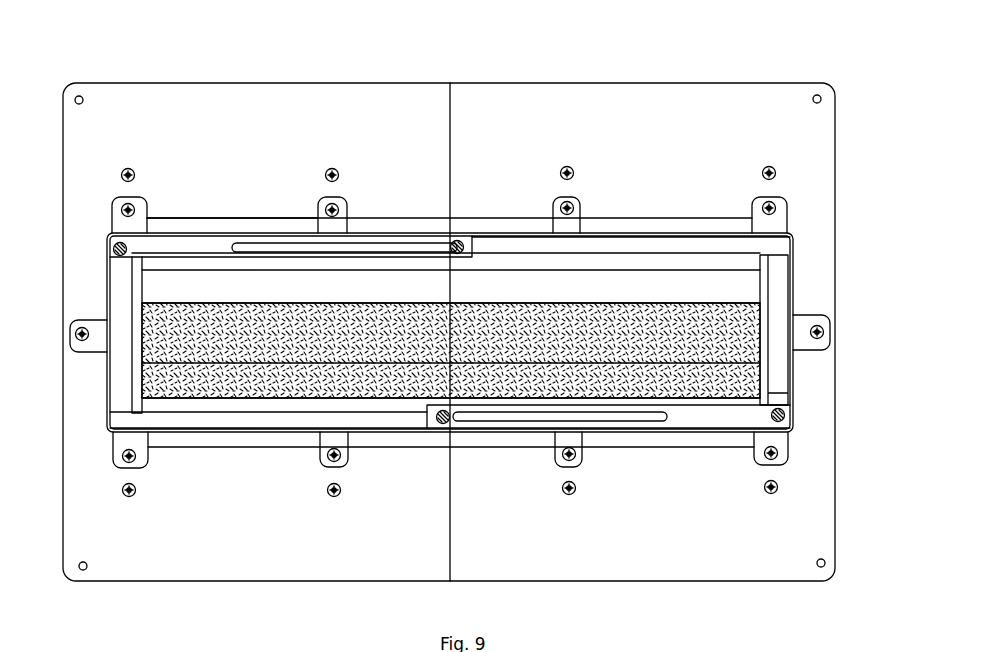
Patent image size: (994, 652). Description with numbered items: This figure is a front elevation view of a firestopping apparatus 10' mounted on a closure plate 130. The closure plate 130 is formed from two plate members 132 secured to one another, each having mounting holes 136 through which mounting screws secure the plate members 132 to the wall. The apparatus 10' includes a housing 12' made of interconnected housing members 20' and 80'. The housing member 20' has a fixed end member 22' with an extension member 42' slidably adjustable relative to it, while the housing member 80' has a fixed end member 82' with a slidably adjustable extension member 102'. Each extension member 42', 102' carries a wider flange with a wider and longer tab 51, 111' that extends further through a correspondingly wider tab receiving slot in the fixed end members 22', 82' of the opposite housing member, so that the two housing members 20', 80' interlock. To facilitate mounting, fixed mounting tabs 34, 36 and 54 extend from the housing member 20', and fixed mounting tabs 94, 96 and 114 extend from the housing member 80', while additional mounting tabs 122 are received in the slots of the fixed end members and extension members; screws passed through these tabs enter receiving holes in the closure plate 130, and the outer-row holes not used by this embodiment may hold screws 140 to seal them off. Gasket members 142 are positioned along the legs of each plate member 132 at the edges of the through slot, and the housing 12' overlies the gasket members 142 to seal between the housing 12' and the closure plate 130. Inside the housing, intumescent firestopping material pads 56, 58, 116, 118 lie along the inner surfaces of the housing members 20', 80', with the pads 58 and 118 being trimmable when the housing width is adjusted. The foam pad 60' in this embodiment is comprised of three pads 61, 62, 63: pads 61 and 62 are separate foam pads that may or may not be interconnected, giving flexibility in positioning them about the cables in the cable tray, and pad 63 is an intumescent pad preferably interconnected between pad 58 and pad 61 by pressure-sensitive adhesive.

The firestopping apparatus 10' is at (467, 329).
The closure plate 130 is at (213, 82).
The plate member 132 is at (336, 88).
The mounting hole 136 is at (80, 96).
The gasket member 142 is at (396, 216).
The fixed mounting tab 54 is at (115, 203).
The screw 140 is at (340, 203).
The fixed mounting tab 34 is at (785, 200).
The fixed mounting tab 94 is at (118, 463).
The additional mounting tab 122 is at (564, 238).
The fixed mounting tab 114 is at (784, 468).
The fixed mounting tab 96 is at (78, 320).
The fixed mounting tab 36 is at (832, 320).
The housing member 80' is at (458, 314).
The housing member 20' is at (502, 312).
The extension member 42' is at (291, 185).
The tab 51 is at (104, 240).
The housing 12' is at (232, 181).
The fixed end member 22' is at (631, 174).
The intumescent firestopping material pad 116 is at (136, 376).
The intumescent firestopping material pad 58 is at (166, 264).
The pad 63 is at (644, 288).
The foam pad 60' is at (451, 253).
The pad 61 is at (572, 334).
The pad 62 is at (690, 378).
The intumescent firestopping material pad 56 is at (764, 374).
The intumescent firestopping material pad 118 is at (167, 406).
The fixed end member 82' is at (450, 478).
The extension member 102' is at (613, 477).
The tab 111' is at (808, 440).